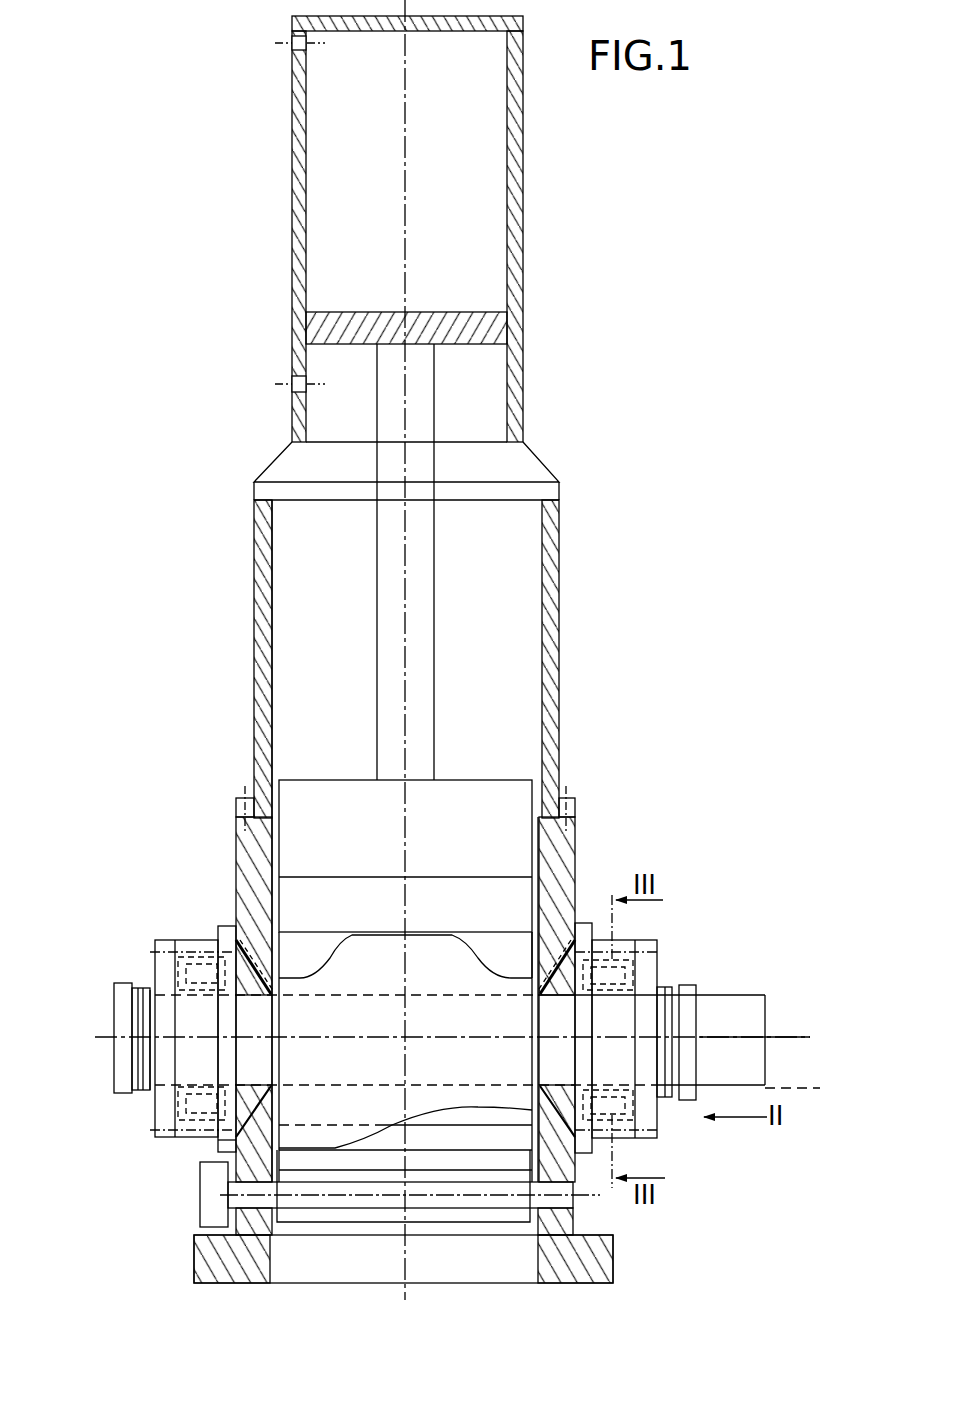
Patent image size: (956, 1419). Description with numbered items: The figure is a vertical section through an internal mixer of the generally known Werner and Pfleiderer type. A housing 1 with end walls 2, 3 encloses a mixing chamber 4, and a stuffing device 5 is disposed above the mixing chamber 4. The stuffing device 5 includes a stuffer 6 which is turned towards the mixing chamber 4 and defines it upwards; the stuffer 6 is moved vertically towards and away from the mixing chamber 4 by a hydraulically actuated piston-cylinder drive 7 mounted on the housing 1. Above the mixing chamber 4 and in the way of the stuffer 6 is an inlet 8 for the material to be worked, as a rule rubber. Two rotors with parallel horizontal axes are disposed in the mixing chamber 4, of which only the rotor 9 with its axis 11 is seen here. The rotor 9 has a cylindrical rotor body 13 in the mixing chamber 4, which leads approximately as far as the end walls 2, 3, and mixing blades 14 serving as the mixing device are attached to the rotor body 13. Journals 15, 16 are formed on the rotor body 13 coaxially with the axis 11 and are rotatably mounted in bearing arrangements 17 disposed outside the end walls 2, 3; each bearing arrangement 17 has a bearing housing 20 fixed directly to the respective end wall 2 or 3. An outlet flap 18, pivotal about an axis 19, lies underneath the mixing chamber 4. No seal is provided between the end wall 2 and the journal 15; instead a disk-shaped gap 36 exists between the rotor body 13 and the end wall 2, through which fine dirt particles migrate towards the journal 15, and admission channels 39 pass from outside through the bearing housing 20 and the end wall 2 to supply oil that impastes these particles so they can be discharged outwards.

The housing 1 is at (568, 541).
The end wall 2 is at (566, 831).
The end wall 3 is at (246, 833).
The mixing chamber 4 is at (295, 945).
The stuffing device 5 is at (449, 680).
The stuffer 6 is at (492, 826).
The piston-cylinder drive 7 is at (514, 383).
The inlet 8 is at (306, 620).
The rotor 9 is at (320, 953).
The axis 11 is at (794, 1042).
The rotor body 13 is at (268, 980).
The mixing blades 14 is at (285, 1160).
The journal 15 is at (731, 1010).
The journal 16 is at (148, 1060).
The bearing arrangement 17 is at (153, 962).
The outlet flap 18 is at (465, 1215).
The axis 19 is at (324, 1200).
The bearing housing 20 is at (190, 1136).
The gap 36 is at (535, 978).
The admission channels 39 is at (560, 955).